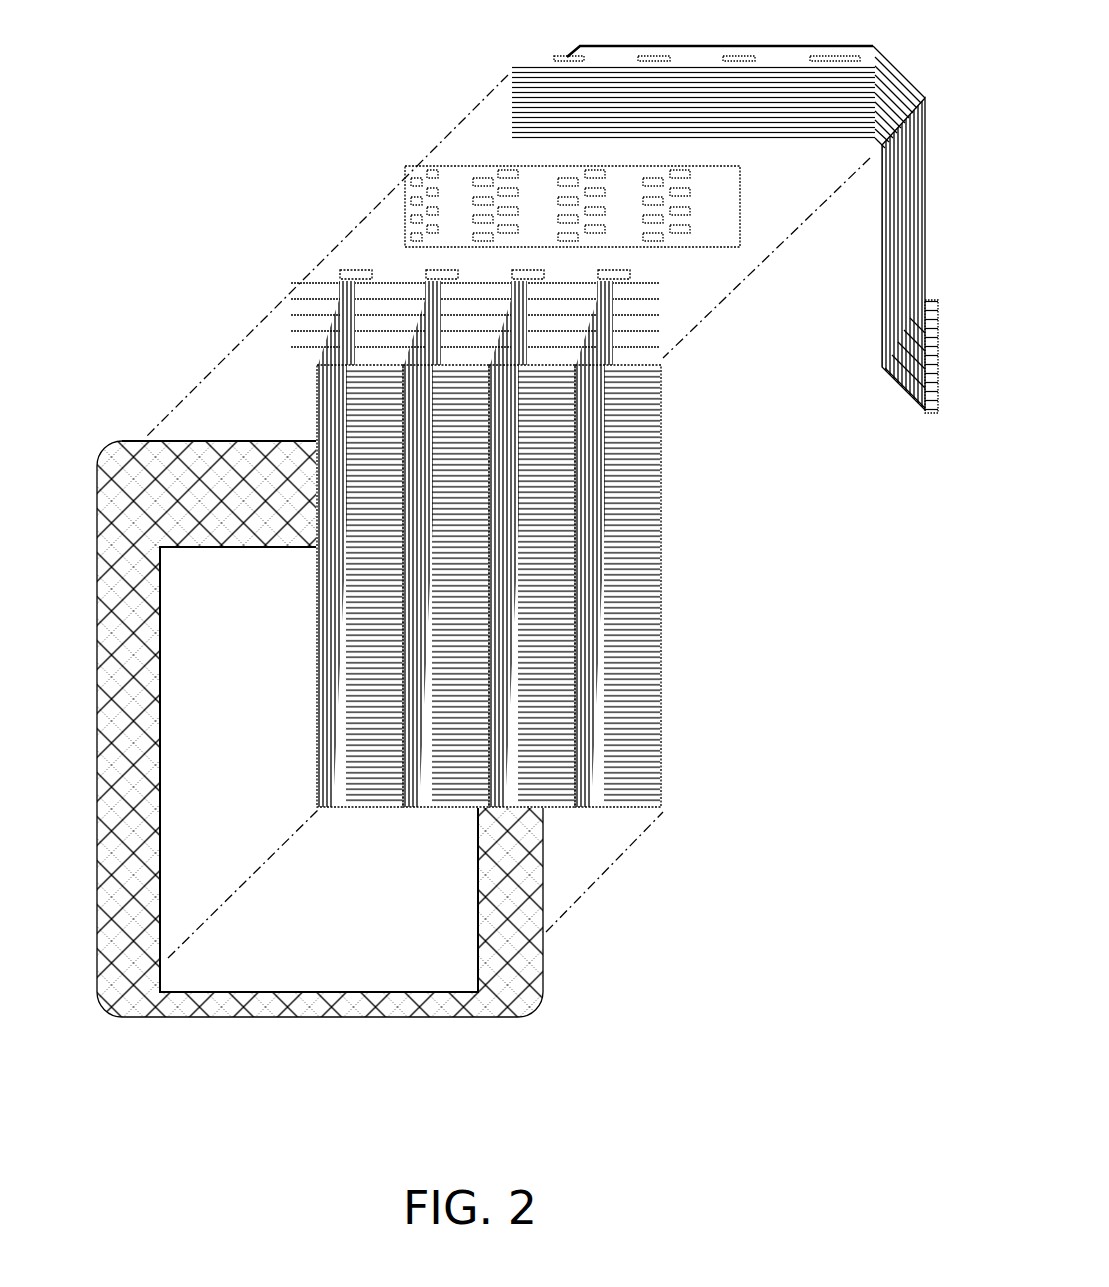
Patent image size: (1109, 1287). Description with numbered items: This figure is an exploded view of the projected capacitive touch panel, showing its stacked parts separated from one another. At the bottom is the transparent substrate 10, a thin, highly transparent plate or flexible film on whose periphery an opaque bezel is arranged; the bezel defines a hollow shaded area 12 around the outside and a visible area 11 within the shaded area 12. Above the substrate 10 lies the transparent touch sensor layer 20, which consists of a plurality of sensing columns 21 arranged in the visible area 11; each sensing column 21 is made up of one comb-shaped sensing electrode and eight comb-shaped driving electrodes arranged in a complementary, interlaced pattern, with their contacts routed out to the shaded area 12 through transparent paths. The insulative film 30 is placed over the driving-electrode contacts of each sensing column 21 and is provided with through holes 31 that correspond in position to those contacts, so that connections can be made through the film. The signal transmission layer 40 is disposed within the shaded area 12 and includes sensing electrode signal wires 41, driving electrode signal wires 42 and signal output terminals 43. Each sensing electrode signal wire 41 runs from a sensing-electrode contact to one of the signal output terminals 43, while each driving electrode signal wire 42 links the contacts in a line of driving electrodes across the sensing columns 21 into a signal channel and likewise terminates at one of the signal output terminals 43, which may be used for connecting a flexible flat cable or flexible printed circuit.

The transparent substrate 10 is at (355, 729).
The visible area 11 is at (178, 792).
The shaded area 12 is at (125, 521).
The transparent touch sensor layer 20 is at (545, 538).
The sensing column 21 is at (691, 580).
The insulative film 30 is at (509, 177).
The through hole 31 is at (480, 182).
The signal transmission layer 40 is at (739, 232).
The sensing electrode signal wire 41 is at (762, 56).
The driving electrode signal wire 42 is at (870, 70).
The signal output terminal 43 is at (927, 302).